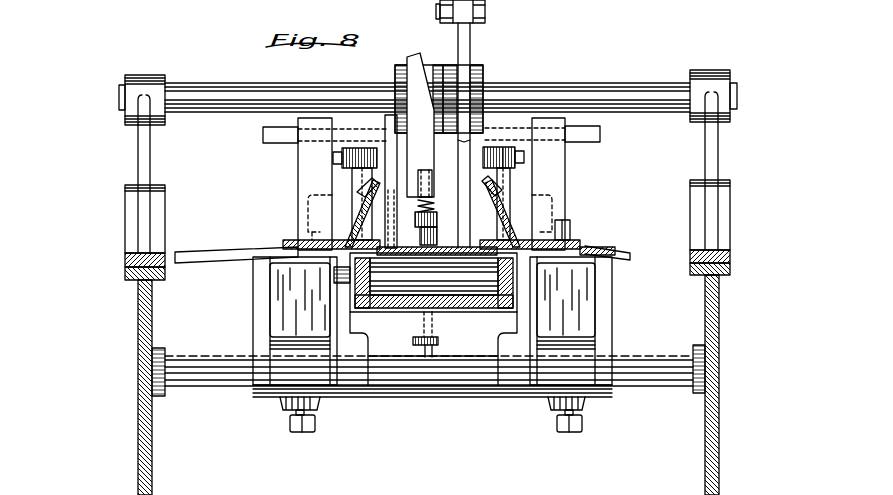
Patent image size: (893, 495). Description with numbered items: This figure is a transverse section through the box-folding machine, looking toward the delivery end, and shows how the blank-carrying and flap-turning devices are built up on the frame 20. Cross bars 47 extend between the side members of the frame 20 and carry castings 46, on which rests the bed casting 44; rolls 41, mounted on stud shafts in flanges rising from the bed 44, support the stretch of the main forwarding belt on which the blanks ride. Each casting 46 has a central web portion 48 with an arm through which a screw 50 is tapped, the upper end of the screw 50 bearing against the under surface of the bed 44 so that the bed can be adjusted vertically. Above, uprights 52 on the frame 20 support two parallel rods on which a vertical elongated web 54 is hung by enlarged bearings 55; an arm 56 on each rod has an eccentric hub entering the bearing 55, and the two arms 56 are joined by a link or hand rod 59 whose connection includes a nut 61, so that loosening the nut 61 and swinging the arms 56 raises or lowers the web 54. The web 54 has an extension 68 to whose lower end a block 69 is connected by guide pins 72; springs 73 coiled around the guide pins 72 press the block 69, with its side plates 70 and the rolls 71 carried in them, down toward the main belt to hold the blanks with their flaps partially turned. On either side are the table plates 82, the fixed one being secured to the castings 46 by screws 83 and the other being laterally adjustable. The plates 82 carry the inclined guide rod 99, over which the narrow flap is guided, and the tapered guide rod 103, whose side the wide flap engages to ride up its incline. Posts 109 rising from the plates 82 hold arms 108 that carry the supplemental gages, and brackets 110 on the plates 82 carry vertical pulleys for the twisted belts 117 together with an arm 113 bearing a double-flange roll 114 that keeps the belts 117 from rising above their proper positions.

The frame 20 is at (137, 318).
The rolls 41 is at (472, 282).
The bed casting 44 is at (403, 310).
The castings 46 is at (605, 302).
The cross bars 47 is at (487, 387).
The central web portions 48 is at (455, 324).
The screw 50 is at (428, 350).
The uprights 52 is at (138, 153).
The vertical elongated web 54 is at (392, 150).
The bearings 55 is at (432, 65).
The arm 56 is at (471, 38).
The link or hand rod 59 is at (590, 86).
The nut 61 is at (440, 4).
The extension 68 is at (423, 127).
The block 69 is at (435, 204).
The side plates 70 is at (440, 216).
The rolls 71 is at (440, 234).
The guide pins 72 is at (434, 162).
The springs 73 is at (432, 182).
The table plates 82 is at (283, 244).
The screws 83 is at (572, 226).
The inclined guide rod 99 is at (356, 194).
The guide rod 103 is at (505, 185).
The arms 108 is at (262, 135).
The posts 109 is at (352, 182).
The brackets 110 is at (345, 240).
The arm 113 is at (350, 168).
The double-flange roll 114 is at (340, 203).
The belts 117 is at (300, 254).